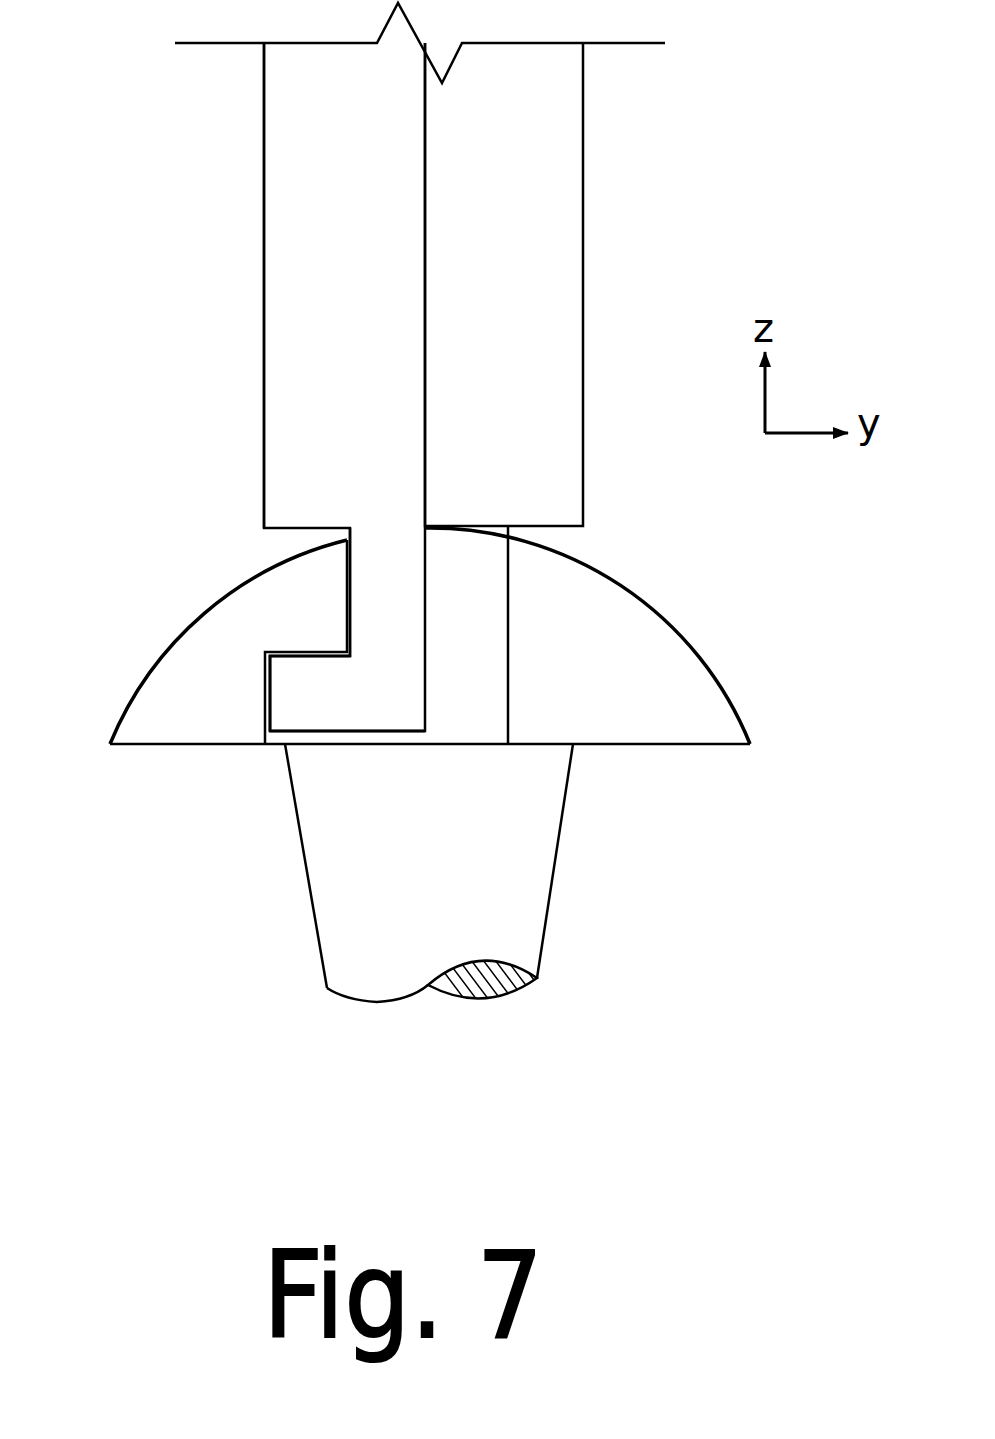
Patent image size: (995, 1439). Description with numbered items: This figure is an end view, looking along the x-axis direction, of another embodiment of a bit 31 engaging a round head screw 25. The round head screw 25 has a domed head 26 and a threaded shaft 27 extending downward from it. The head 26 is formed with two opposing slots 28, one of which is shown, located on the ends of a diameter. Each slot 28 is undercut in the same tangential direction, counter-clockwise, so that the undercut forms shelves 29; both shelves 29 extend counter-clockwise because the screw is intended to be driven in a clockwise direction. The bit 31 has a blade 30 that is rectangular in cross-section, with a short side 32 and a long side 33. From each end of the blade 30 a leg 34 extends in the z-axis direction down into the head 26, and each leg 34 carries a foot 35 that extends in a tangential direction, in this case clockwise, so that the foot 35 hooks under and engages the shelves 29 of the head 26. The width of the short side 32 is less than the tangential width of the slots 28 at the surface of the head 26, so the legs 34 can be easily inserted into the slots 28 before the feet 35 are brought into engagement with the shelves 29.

The round head screw 25 is at (569, 795).
The head 26 is at (698, 652).
The threaded shaft 27 is at (300, 840).
The slot 28 is at (342, 735).
The shelf 29 is at (325, 592).
The blade 30 is at (264, 297).
The bit 31 is at (583, 103).
The short side 32 is at (343, 198).
The long side 33 is at (505, 290).
The leg 34 is at (393, 608).
The foot 35 is at (302, 695).